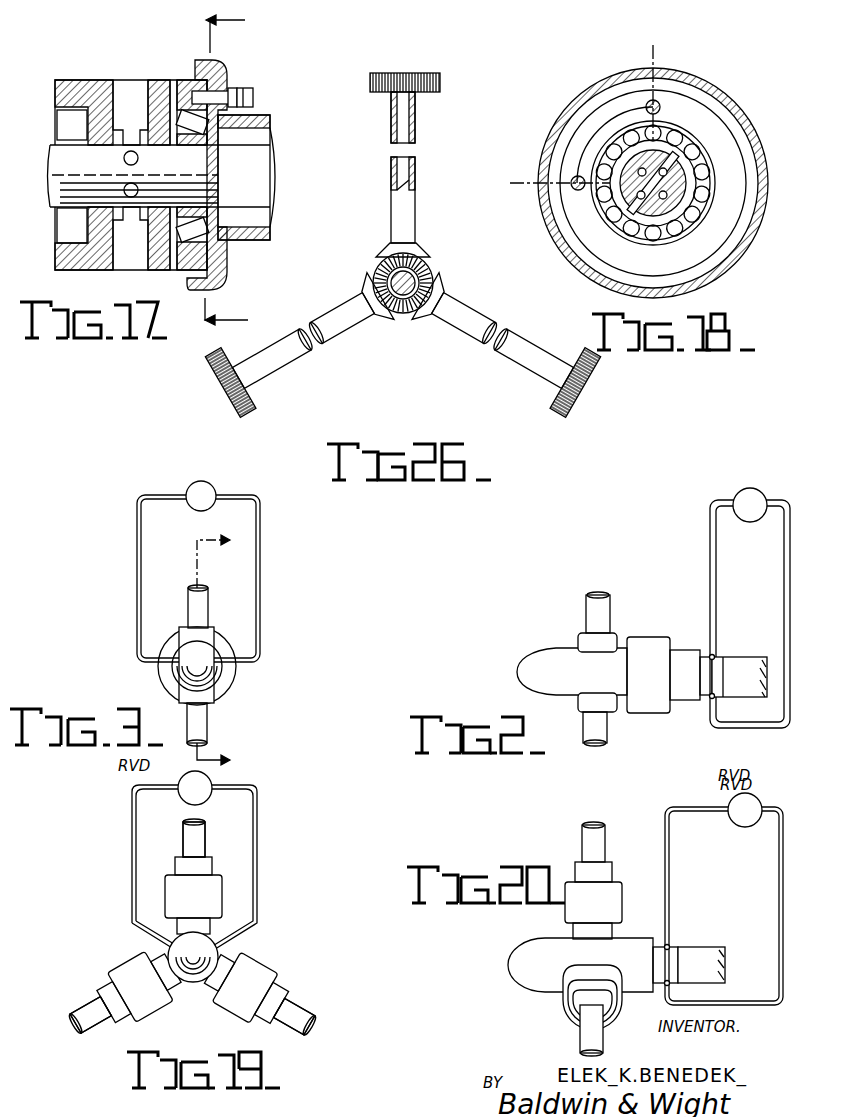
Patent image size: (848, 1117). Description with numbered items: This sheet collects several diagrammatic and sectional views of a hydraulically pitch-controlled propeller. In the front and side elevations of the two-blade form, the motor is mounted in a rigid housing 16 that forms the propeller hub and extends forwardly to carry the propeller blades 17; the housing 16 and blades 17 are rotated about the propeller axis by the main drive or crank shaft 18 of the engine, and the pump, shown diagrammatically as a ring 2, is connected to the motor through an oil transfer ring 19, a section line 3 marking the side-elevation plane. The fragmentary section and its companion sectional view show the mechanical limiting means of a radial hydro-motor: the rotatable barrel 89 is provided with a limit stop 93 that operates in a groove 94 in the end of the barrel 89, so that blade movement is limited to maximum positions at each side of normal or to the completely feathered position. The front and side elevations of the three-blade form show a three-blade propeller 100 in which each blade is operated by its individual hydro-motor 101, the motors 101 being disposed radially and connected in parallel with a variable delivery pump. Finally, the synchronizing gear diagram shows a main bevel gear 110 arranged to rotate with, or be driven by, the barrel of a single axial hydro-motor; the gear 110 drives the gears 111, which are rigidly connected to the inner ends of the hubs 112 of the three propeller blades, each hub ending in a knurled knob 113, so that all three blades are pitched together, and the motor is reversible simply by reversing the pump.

In FIG. 17, the rotatable barrel 89 is at (101, 63).
In FIG. 17, the limit stop 93 is at (247, 87).
In FIG. 17, the main drive or crank shaft 18 is at (245, 171).
In FIG. 2, the main drive or crank shaft 18 is at (736, 657).
In FIG. 20, the main drive or crank shaft 18 is at (726, 966).
In FIG. 18, the groove 94 is at (600, 125).
In FIG. 26, the main bevel gear 110 is at (380, 272).
In FIG. 26, the gears 111 is at (430, 257).
In FIG. 26, the hubs of the propeller blades 112 is at (415, 125).
In FIG. 26, the knurled knob 113 is at (428, 50).
In FIG. 3, the ring 2 is at (214, 484).
In FIG. 2, the ring 2 is at (764, 486).
In FIG. 19, the ring 2 is at (195, 788).
In FIG. 20, the ring 2 is at (745, 810).
In FIG. 3, the section line 3- 3 is at (227, 652).
In FIG. 3, the rigid housing 16 is at (230, 684).
In FIG. 2, the rigid housing 16 is at (654, 636).
In FIG. 3, the propeller blades 17 is at (208, 598).
In FIG. 2, the propeller blades 17 is at (600, 597).
In FIG. 2, the oil transfer ring 19 is at (710, 700).
In FIG. 20, the oil transfer ring 19 is at (672, 947).
In FIG. 19, the three-blade propeller 100 is at (200, 824).
In FIG. 20, the three-blade propeller 100 is at (610, 805).
In FIG. 19, the hydro-motor 101 is at (222, 897).
In FIG. 20, the hydro-motor 101 is at (598, 898).